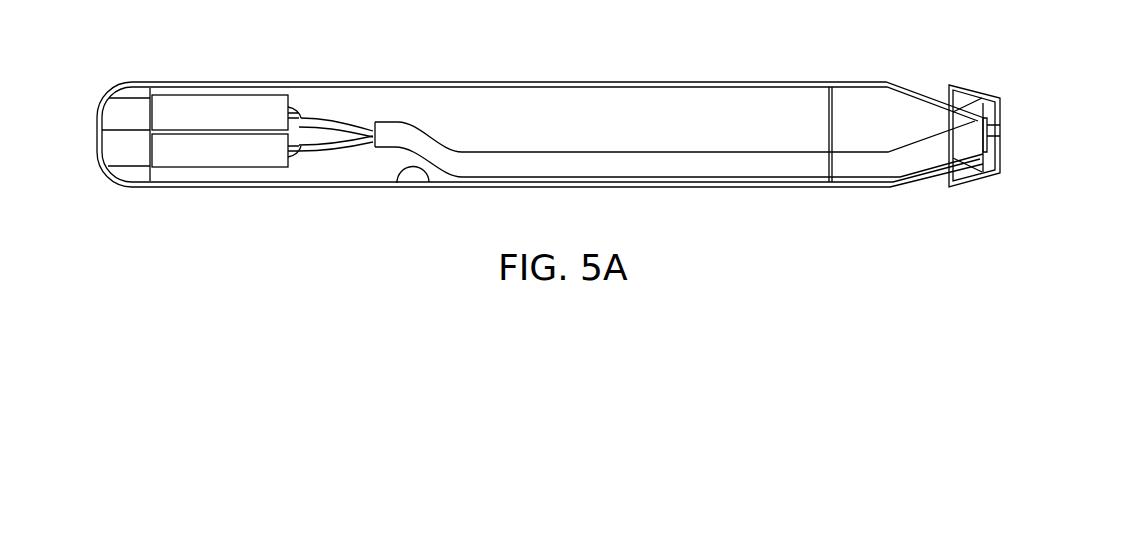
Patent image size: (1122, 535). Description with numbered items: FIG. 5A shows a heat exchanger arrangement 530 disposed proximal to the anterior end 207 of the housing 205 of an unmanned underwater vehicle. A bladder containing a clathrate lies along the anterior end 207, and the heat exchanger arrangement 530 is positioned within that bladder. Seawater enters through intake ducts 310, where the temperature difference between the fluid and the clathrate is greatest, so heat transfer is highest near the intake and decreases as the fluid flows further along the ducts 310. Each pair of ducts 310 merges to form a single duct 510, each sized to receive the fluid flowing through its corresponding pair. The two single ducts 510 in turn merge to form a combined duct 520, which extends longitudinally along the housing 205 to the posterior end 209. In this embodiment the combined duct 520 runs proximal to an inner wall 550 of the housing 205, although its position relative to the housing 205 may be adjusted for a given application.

The housing 205 is at (733, 82).
The anterior end 207 is at (97, 136).
The posterior end 209 is at (982, 128).
The ducts 310 is at (302, 221).
The single ducts 510 is at (334, 110).
The combined duct 520 is at (642, 167).
The heat exchanger arrangement 530 is at (209, 122).
The inner wall 550 is at (397, 184).